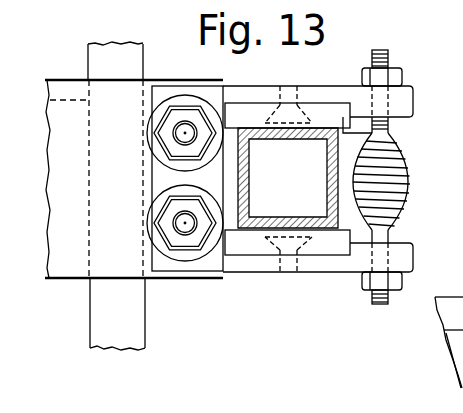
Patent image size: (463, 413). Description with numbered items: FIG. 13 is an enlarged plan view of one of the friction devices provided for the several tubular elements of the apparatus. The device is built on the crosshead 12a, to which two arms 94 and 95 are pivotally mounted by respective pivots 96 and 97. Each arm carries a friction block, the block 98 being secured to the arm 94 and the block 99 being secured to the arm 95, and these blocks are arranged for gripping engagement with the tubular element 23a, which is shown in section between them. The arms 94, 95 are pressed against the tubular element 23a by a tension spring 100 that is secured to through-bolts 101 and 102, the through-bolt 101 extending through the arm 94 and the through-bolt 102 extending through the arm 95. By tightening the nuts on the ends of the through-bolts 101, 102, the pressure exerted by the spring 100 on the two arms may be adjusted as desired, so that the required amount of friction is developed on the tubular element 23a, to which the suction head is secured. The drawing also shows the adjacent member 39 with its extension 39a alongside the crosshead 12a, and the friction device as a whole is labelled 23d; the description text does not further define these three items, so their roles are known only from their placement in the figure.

The support bar 39 is at (63, 82).
The bar extension 39a is at (107, 340).
The crosshead 12a is at (67, 270).
The clamp assembly 23d is at (297, 73).
The tubular element 23a is at (243, 228).
The arm 94 is at (345, 78).
The arm 95 is at (315, 273).
The pivot 96 is at (184, 128).
The pivot 97 is at (184, 230).
The friction block 98 is at (390, 133).
The friction block 99 is at (345, 233).
The tension spring 100 is at (407, 200).
The through-bolt 101 is at (391, 50).
The through-bolt 102 is at (382, 305).